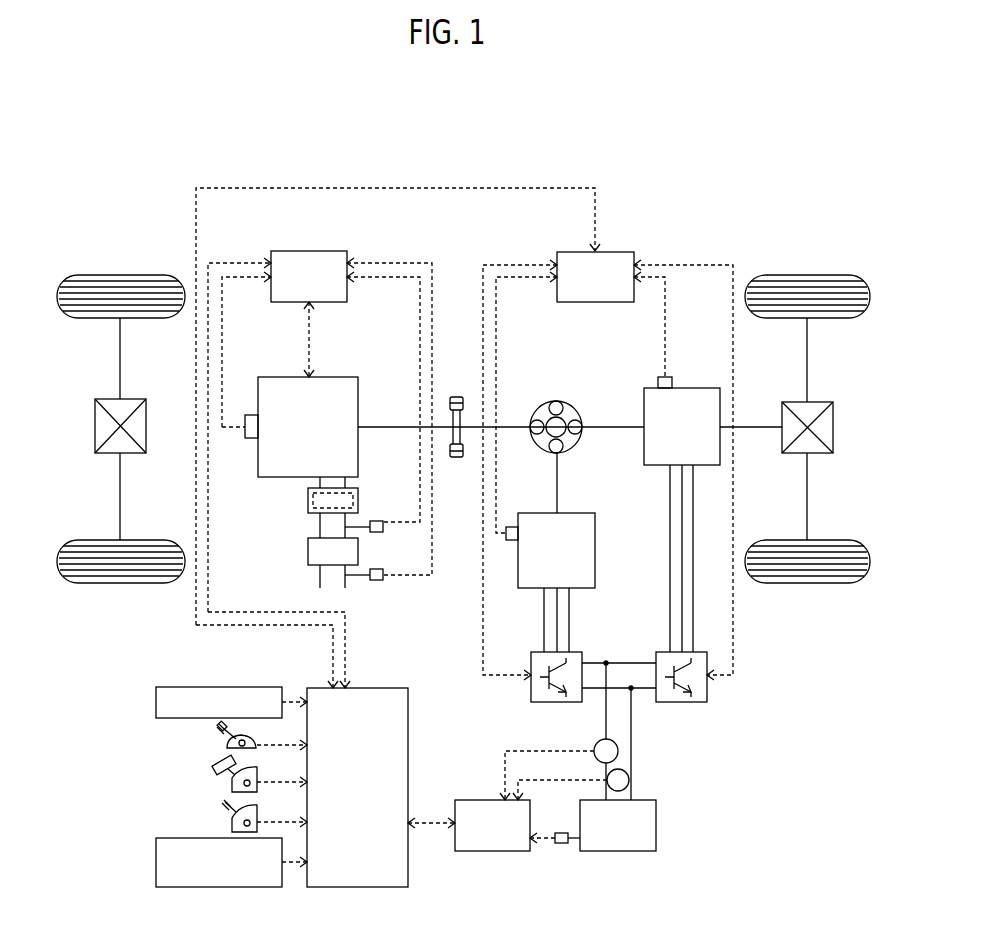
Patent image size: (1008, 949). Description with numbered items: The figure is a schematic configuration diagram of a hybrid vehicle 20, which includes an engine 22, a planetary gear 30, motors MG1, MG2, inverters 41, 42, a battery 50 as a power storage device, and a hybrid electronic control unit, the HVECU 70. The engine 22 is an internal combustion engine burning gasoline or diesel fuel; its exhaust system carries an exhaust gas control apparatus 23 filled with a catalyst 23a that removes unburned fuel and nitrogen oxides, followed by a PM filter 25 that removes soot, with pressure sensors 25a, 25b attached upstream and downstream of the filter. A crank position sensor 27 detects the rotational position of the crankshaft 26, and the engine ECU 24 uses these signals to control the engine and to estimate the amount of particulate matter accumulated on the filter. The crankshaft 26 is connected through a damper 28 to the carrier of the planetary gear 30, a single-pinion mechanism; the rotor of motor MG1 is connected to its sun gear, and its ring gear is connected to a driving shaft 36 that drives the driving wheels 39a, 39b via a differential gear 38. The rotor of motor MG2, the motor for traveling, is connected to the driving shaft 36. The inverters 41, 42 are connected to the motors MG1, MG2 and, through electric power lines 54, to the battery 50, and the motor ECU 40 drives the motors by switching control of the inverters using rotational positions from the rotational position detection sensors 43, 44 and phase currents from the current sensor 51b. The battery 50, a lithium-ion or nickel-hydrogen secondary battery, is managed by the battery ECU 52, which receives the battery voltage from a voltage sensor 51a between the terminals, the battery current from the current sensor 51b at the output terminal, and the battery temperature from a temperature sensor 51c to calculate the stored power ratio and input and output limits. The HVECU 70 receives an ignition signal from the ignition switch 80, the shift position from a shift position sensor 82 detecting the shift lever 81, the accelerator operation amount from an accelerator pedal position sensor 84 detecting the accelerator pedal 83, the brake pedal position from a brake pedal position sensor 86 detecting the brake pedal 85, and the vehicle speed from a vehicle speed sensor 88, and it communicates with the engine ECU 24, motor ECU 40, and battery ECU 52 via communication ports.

The hybrid vehicle 20 is at (727, 201).
The engine 22 is at (331, 376).
The exhaust gas control apparatus 23 is at (307, 498).
The catalyst 23a is at (313, 505).
The engine ECU 24 is at (307, 250).
The PM filter 25 is at (307, 552).
The pressure sensor 25a is at (378, 520).
The pressure sensor 25b is at (376, 582).
The crankshaft 26 is at (374, 426).
The crank position sensor 27 is at (249, 414).
The damper 28 is at (457, 396).
The planetary gear 30 is at (557, 400).
The driving shaft 36 is at (756, 426).
The differential gear 38 is at (818, 401).
The driving wheel 39a is at (807, 274).
The driving wheel 39b is at (807, 584).
The motor ECU 40 is at (603, 251).
The inverter 41 is at (576, 651).
The inverter 42 is at (703, 651).
The rotational position detection sensor 43 is at (512, 526).
The rotational position detection sensor 44 is at (660, 376).
The motor MG1 is at (582, 512).
The motor MG2 is at (690, 387).
The battery 50 is at (657, 827).
The voltage sensor 51a is at (629, 780).
The current sensor 51b is at (618, 751).
The temperature sensor 51c is at (561, 846).
The battery ECU 52 is at (483, 799).
The electric power lines 54 is at (606, 715).
The HVECU 70 is at (381, 687).
The ignition switch 80 is at (156, 700).
The shift lever 81 is at (222, 731).
The shift position sensor 82 is at (227, 746).
The accelerator pedal 83 is at (213, 768).
The accelerator pedal position sensor 84 is at (232, 788).
The brake pedal 85 is at (226, 812).
The brake pedal position sensor 86 is at (232, 830).
The vehicle speed sensor 88 is at (156, 862).